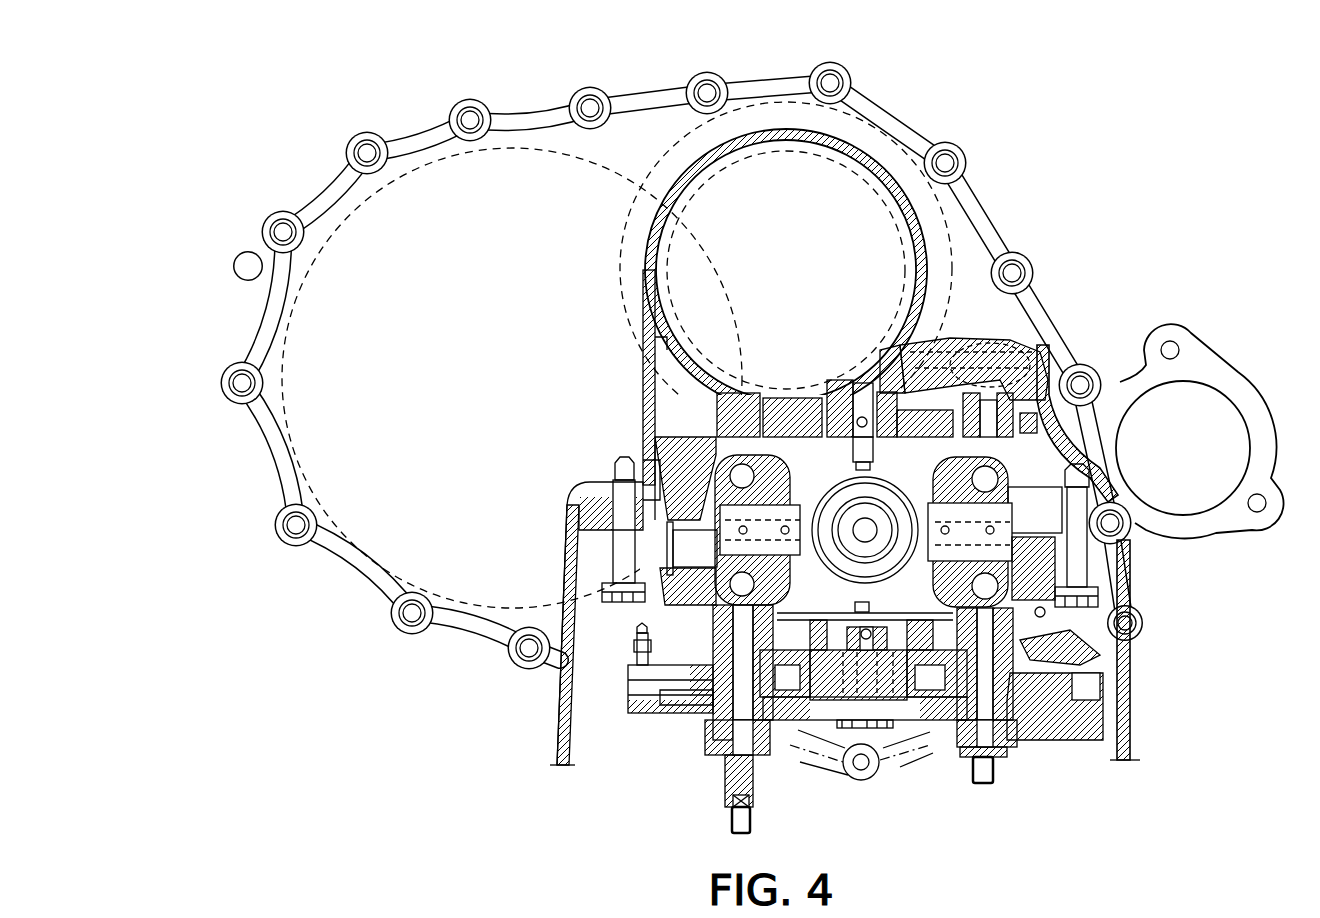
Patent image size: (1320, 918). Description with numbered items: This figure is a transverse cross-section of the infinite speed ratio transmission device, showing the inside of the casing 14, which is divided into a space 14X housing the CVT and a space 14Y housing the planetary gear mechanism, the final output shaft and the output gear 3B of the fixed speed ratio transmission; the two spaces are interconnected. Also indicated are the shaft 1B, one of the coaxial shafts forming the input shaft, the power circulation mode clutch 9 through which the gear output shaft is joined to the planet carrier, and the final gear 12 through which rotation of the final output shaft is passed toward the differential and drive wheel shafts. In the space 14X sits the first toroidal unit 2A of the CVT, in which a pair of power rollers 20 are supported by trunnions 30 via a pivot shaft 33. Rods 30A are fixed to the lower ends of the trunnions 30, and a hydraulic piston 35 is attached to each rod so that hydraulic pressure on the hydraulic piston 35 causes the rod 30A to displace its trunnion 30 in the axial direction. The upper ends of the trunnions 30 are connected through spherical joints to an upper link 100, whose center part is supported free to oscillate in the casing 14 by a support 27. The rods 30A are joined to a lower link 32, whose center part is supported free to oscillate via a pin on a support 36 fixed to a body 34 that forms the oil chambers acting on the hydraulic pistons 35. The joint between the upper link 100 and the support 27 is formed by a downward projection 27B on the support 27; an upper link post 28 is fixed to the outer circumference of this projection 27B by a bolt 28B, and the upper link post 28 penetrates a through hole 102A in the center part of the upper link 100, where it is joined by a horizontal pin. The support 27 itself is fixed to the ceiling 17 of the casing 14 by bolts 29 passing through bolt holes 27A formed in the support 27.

The shaft 1B is at (760, 497).
The first toroidal unit 2A is at (1036, 768).
The output gear 3B is at (672, 140).
The power circulation mode clutch 9 is at (782, 148).
The final gear 12 is at (335, 222).
The casing 14 is at (1130, 705).
The space 14X is at (604, 715).
The space 14Y is at (835, 200).
The ceiling 17 is at (957, 340).
The power roller 20 is at (888, 622).
The support 27 is at (882, 355).
The bolt hole 27A is at (1018, 342).
The downward projection 27B is at (850, 400).
The upper link post 28 is at (898, 490).
The bolt 28B is at (890, 478).
The bolt 29 is at (950, 335).
The trunnion 30 is at (672, 605).
The rod 30A is at (752, 790).
The lower link 32 is at (1050, 633).
The pivot shaft 33 is at (690, 555).
The body 34 is at (680, 712).
The hydraulic piston 35 is at (690, 699).
The support 36 is at (852, 642).
The upper link 100 is at (789, 398).
The through hole 102A is at (833, 461).